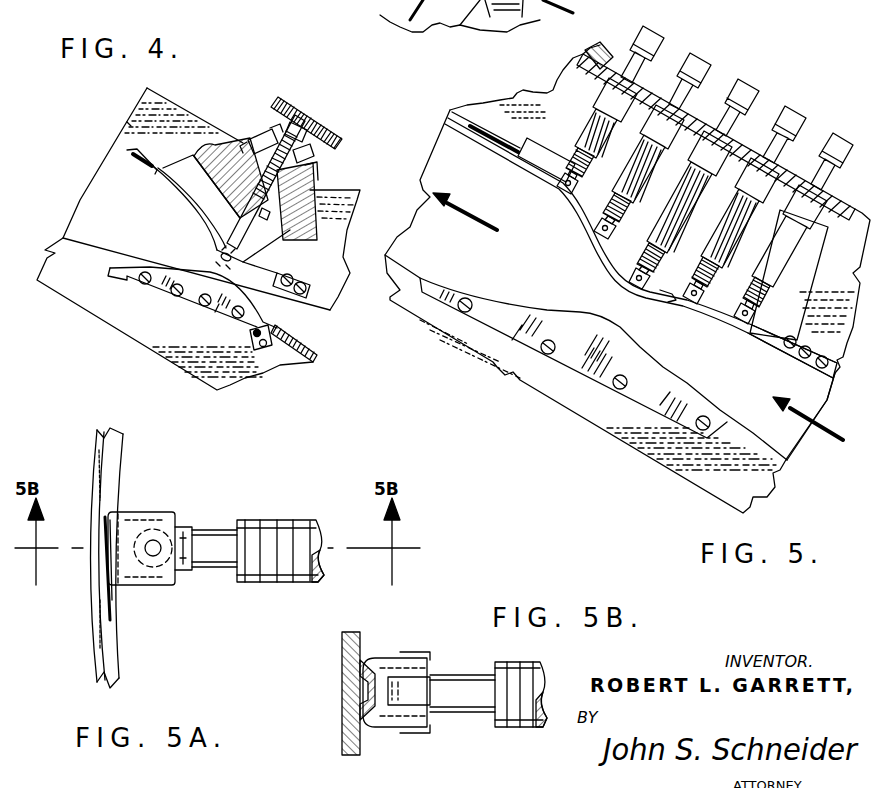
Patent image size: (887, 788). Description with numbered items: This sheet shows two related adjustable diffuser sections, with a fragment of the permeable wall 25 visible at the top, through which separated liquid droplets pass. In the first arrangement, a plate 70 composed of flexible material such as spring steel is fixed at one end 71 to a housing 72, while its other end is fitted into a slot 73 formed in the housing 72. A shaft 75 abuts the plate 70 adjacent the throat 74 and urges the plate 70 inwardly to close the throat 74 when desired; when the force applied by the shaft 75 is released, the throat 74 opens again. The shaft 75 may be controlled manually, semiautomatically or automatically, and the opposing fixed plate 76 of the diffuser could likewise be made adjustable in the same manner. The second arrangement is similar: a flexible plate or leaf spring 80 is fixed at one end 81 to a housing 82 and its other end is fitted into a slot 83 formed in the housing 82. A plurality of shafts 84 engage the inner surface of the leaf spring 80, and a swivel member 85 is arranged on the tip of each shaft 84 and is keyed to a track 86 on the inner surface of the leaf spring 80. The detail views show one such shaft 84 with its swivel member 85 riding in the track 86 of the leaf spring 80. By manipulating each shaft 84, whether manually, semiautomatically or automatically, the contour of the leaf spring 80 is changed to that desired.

In FIG. 5, the permeable wall 25 is at (463, 25).
In FIG. 4, the plate 70 is at (205, 221).
In FIG. 4, the end 71 is at (303, 283).
In FIG. 4, the housing 72 is at (330, 310).
In FIG. 4, the slot 73 is at (130, 148).
In FIG. 4, the throat 74 is at (215, 263).
In FIG. 4, the shaft 75 is at (297, 153).
In FIG. 4, the opposing fixed plate 76 is at (198, 285).
In FIG. 5, the leaf spring 80 is at (570, 204).
In FIG. 5A, the leaf spring 80 is at (104, 446).
In FIG. 5B, the leaf spring 80 is at (347, 734).
In FIG. 5, the end 81 is at (793, 348).
In FIG. 5, the housing 82 is at (840, 374).
In FIG. 5, the slot 83 is at (450, 114).
In FIG. 5, the shafts 84 is at (650, 228).
In FIG. 5A, the shafts 84 is at (282, 530).
In FIG. 5B, the shafts 84 is at (503, 700).
In FIG. 5, the swivel member 85 is at (694, 300).
In FIG. 5A, the swivel member 85 is at (148, 508).
In FIG. 5B, the swivel member 85 is at (403, 718).
In FIG. 5, the track 86 is at (670, 290).
In FIG. 5A, the track 86 is at (110, 623).
In FIG. 5B, the track 86 is at (370, 690).